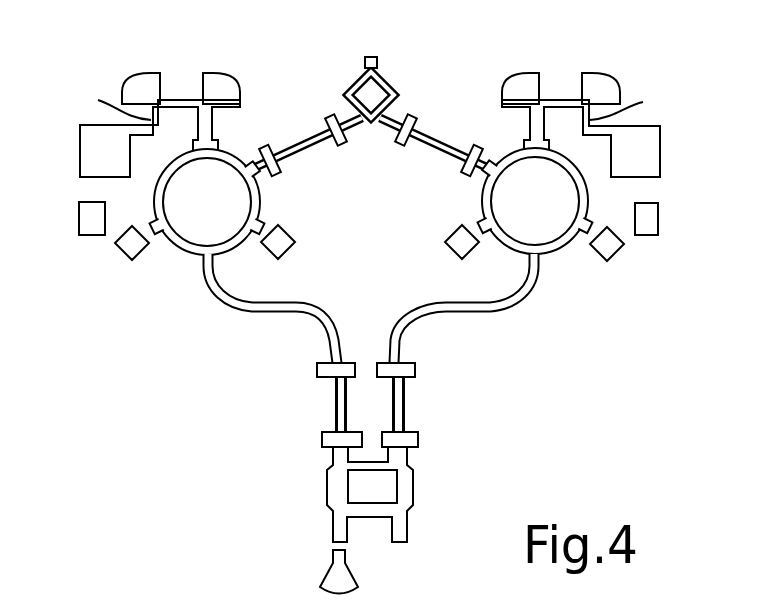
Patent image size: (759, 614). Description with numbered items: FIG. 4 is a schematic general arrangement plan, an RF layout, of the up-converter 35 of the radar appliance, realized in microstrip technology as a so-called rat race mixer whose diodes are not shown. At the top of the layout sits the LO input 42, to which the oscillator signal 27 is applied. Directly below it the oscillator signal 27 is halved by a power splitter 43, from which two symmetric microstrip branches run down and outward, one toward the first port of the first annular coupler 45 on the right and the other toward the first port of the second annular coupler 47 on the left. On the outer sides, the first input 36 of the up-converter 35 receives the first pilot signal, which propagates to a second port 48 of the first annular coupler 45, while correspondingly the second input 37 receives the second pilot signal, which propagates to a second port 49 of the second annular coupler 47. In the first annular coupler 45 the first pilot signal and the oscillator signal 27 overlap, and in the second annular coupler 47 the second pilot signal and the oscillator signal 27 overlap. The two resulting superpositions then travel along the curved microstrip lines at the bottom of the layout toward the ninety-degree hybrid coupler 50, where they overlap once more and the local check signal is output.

The oscillator signal 27 is at (359, 44).
The up-converter 35 is at (330, 424).
The first input 36 is at (640, 162).
The second input 37 is at (90, 152).
The LO input 42 is at (373, 57).
The power splitter 43 is at (378, 136).
The first annular coupler 45 is at (476, 207).
The second annular coupler 47 is at (270, 208).
The second port 48 is at (618, 106).
The second port 49 is at (145, 121).
The 90° hybrid coupler 50 is at (425, 477).